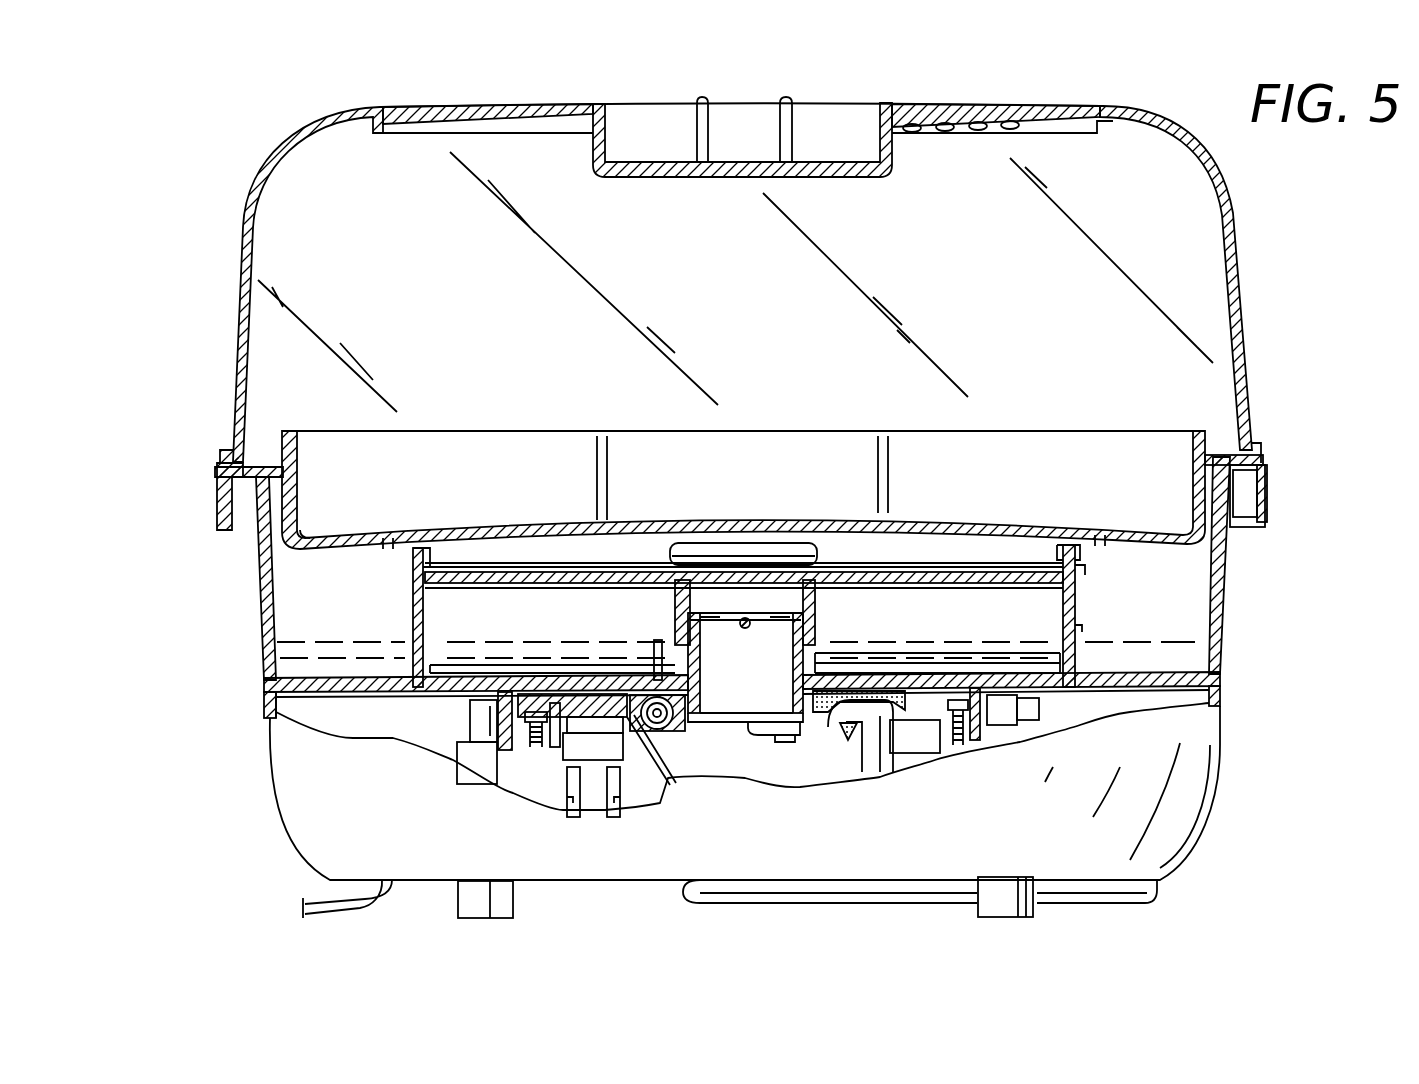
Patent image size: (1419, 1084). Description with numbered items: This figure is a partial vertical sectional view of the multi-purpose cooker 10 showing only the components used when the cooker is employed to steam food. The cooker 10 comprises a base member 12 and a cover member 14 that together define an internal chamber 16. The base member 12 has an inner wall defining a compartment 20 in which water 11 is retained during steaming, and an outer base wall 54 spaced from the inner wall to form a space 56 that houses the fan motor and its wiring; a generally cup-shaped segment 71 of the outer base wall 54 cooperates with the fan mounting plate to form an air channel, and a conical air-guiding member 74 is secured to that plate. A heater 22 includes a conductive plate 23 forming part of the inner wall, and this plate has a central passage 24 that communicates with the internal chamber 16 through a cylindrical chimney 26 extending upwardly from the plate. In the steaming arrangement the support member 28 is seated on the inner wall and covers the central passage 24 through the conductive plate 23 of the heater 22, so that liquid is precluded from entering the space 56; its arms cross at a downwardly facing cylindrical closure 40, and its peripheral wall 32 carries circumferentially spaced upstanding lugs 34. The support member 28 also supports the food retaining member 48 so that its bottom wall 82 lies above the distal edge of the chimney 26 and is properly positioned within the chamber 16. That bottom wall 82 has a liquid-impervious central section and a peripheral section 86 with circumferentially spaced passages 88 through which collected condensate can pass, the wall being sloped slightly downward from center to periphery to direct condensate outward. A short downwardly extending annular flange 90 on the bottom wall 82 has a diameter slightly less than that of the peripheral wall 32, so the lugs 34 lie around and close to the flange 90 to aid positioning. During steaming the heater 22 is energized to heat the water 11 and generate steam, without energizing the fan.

The multi-purpose cooker 10 is at (1282, 264).
The water 11 is at (323, 650).
The base member 12 is at (1240, 558).
The cover member 14 is at (1246, 226).
The internal chamber 16 is at (1198, 352).
The compartment 20 is at (1180, 603).
The heater 22 is at (658, 670).
The conductive plate 23 is at (905, 690).
The central passage 24 is at (762, 722).
The cylindrical chimney 26 is at (805, 656).
The support member 28 is at (1137, 557).
The peripheral wall 32 is at (1073, 629).
The lugs 34 is at (410, 553).
The cylindrical closure 40 is at (815, 613).
The food retaining member 48 is at (1214, 418).
The outer base wall 54 is at (1198, 745).
The space 56 is at (307, 716).
The cup-shaped segment 71 is at (750, 893).
The conical air-guiding member 74 is at (743, 787).
The bottom wall 82 is at (924, 518).
The peripheral section 86 is at (363, 523).
The passages 88 is at (387, 540).
The annular flange 90 is at (463, 535).